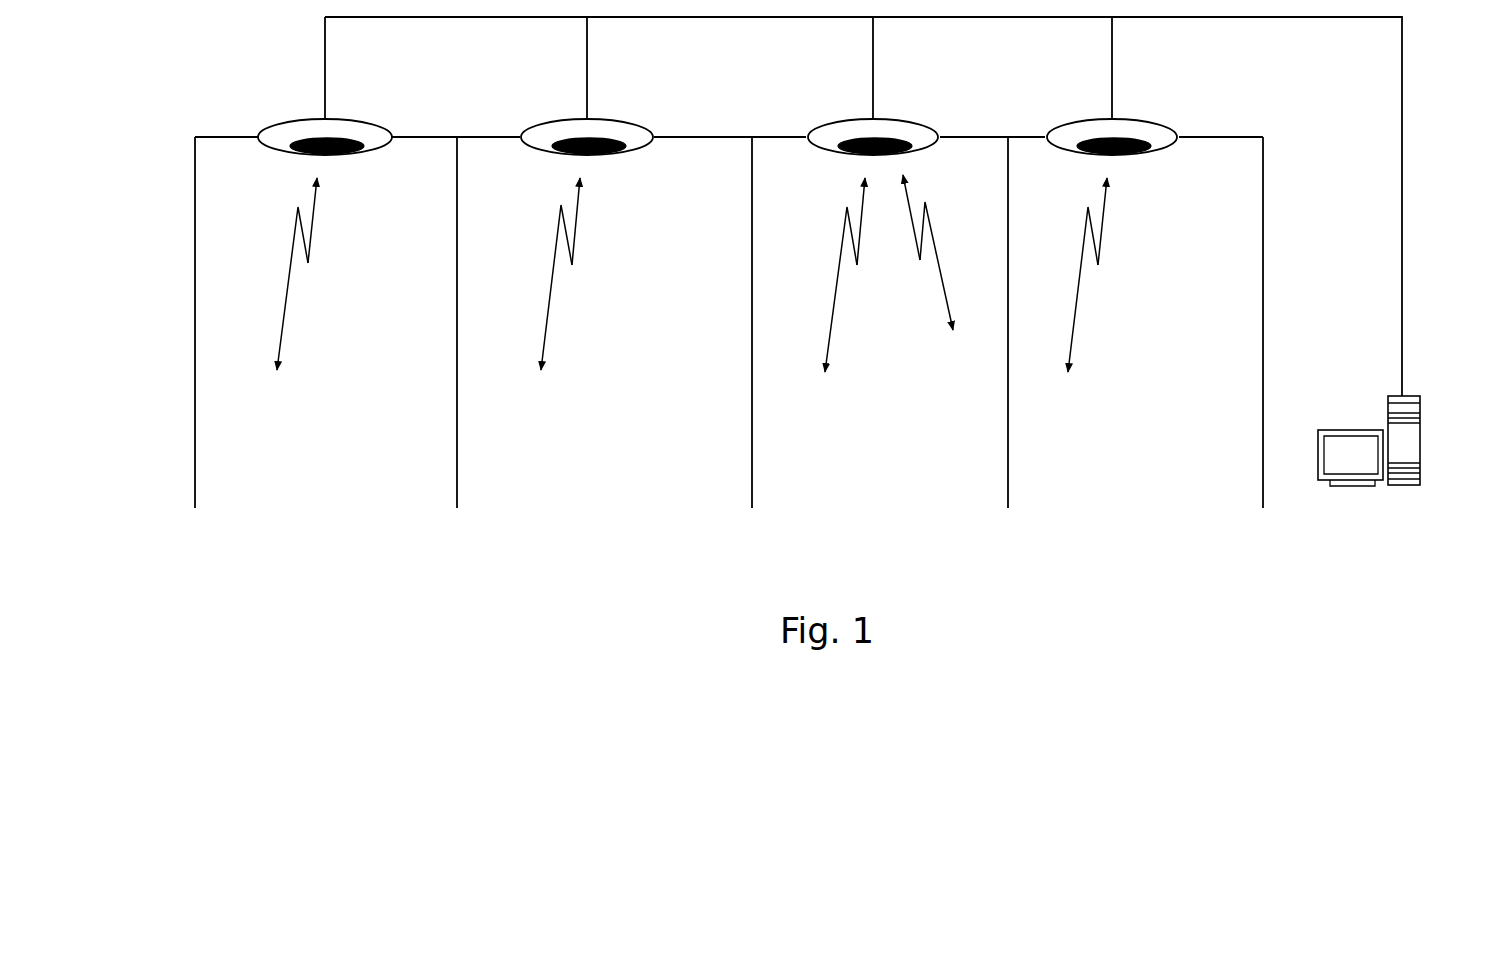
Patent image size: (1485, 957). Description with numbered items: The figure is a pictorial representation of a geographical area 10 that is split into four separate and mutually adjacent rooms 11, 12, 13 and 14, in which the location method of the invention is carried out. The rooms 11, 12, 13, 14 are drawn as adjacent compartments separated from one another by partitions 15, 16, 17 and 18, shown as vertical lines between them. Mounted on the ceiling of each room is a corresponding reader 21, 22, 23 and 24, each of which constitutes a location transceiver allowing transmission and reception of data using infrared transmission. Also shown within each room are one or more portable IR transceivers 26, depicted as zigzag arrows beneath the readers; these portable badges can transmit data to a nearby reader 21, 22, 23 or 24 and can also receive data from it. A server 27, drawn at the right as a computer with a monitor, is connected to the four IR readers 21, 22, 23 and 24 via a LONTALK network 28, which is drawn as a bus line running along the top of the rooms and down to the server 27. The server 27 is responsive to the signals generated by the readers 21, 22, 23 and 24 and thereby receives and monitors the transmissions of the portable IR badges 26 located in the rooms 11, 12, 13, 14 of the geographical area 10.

The geographical area 10 is at (227, 135).
The room 11 is at (257, 236).
The room 12 is at (519, 252).
The room 13 is at (811, 247).
The room 14 is at (1061, 257).
The partition 15 is at (435, 322).
The partition 16 is at (733, 322).
The partition 17 is at (988, 322).
The partition 18 is at (1246, 322).
The reader 21 is at (325, 119).
The reader 22 is at (587, 119).
The reader 23 is at (873, 119).
The reader 24 is at (1112, 119).
The portable IR transceiver 26 is at (681, 297).
The server 27 is at (1420, 445).
The LONTALK network 28 is at (863, 206).